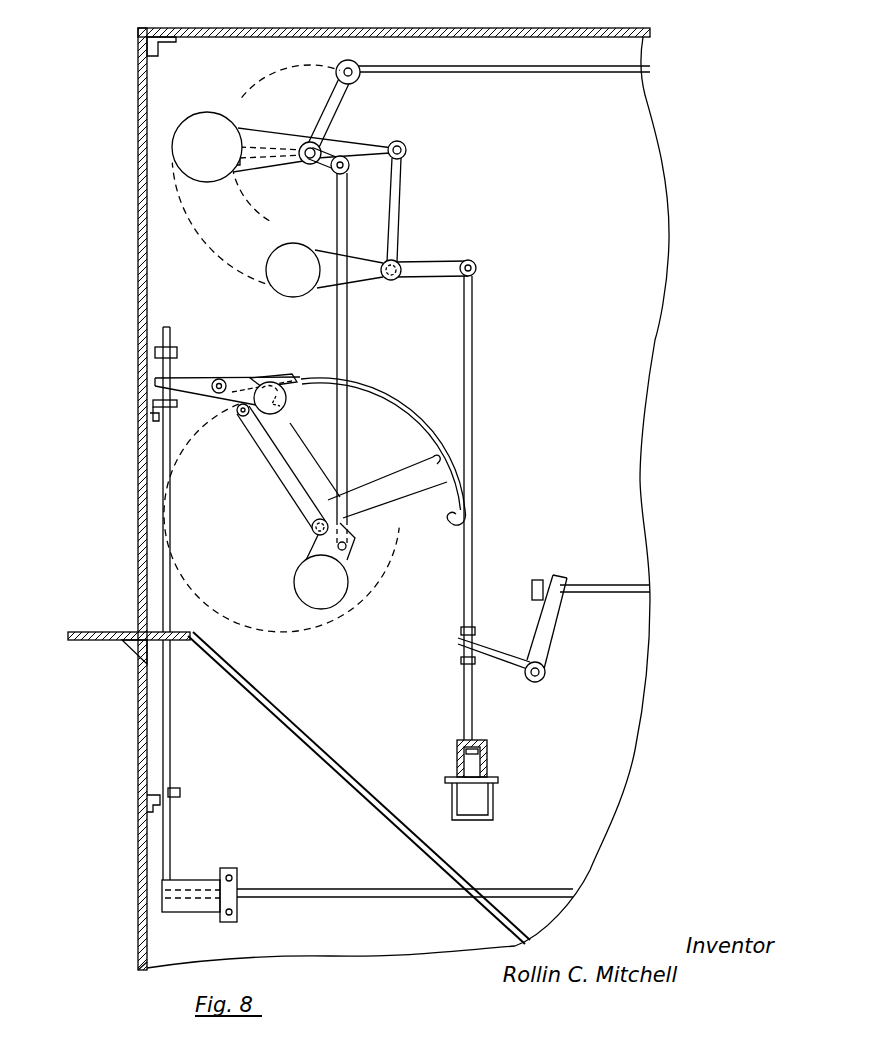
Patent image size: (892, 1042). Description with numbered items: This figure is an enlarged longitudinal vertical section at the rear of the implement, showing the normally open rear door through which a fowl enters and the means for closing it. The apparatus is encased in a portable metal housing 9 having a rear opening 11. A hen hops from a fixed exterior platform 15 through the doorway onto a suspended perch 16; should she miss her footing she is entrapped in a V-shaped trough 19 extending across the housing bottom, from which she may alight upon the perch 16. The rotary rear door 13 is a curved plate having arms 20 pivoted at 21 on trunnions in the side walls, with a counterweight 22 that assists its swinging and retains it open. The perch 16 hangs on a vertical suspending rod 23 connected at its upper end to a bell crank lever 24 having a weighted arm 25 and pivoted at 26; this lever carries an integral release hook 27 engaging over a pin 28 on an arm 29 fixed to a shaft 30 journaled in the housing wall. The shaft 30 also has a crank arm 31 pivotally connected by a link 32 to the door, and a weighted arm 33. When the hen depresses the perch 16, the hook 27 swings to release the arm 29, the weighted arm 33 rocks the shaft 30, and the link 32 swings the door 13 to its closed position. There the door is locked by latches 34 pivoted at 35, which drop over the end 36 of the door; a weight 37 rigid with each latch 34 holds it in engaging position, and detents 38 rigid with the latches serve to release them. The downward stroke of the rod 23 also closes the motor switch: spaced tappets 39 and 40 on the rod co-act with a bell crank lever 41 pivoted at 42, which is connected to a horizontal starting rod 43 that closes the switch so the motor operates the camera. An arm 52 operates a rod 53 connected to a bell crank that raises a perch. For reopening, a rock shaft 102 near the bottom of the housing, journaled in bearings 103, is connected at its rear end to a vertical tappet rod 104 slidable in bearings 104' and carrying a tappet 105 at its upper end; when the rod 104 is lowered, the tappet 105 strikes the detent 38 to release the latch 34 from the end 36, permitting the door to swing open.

The housing 9 is at (140, 332).
The rear opening 11 is at (143, 492).
The rear door 13 is at (382, 395).
The exterior platform 15 is at (88, 632).
The suspended perch 16 is at (455, 746).
The V-shaped trough 19 is at (355, 790).
The arms 20 is at (288, 465).
The pivot 21 is at (310, 530).
The counterweight 22 is at (312, 595).
The suspending rod 23 is at (474, 553).
The bell crank lever 24 is at (398, 195).
The weighted arm 25 is at (280, 275).
The pivot 26 is at (388, 279).
The release hook 27 is at (406, 151).
The pin 28 is at (404, 156).
The arm 29 is at (358, 146).
The shaft 30 is at (308, 164).
The crank arm 31 is at (330, 178).
The link 32 is at (348, 349).
The weighted arm 33 is at (224, 199).
The latch 34 is at (272, 377).
The latch pivot 35 is at (220, 379).
The door end 36 is at (472, 520).
The weight 37 is at (288, 405).
The detent 38 is at (208, 388).
The tappet 39 is at (461, 631).
The tappet 40 is at (461, 662).
The bell crank lever 41 is at (495, 654).
The pivot 42 is at (547, 670).
The starting rod 43 is at (612, 587).
The arm 52 is at (332, 98).
The rod 53 is at (540, 64).
The rock shaft 102 is at (298, 893).
The bearings 103 is at (233, 885).
The tappet rod 104 is at (199, 760).
The bearings 104' is at (203, 791).
The tappet 105 is at (153, 380).